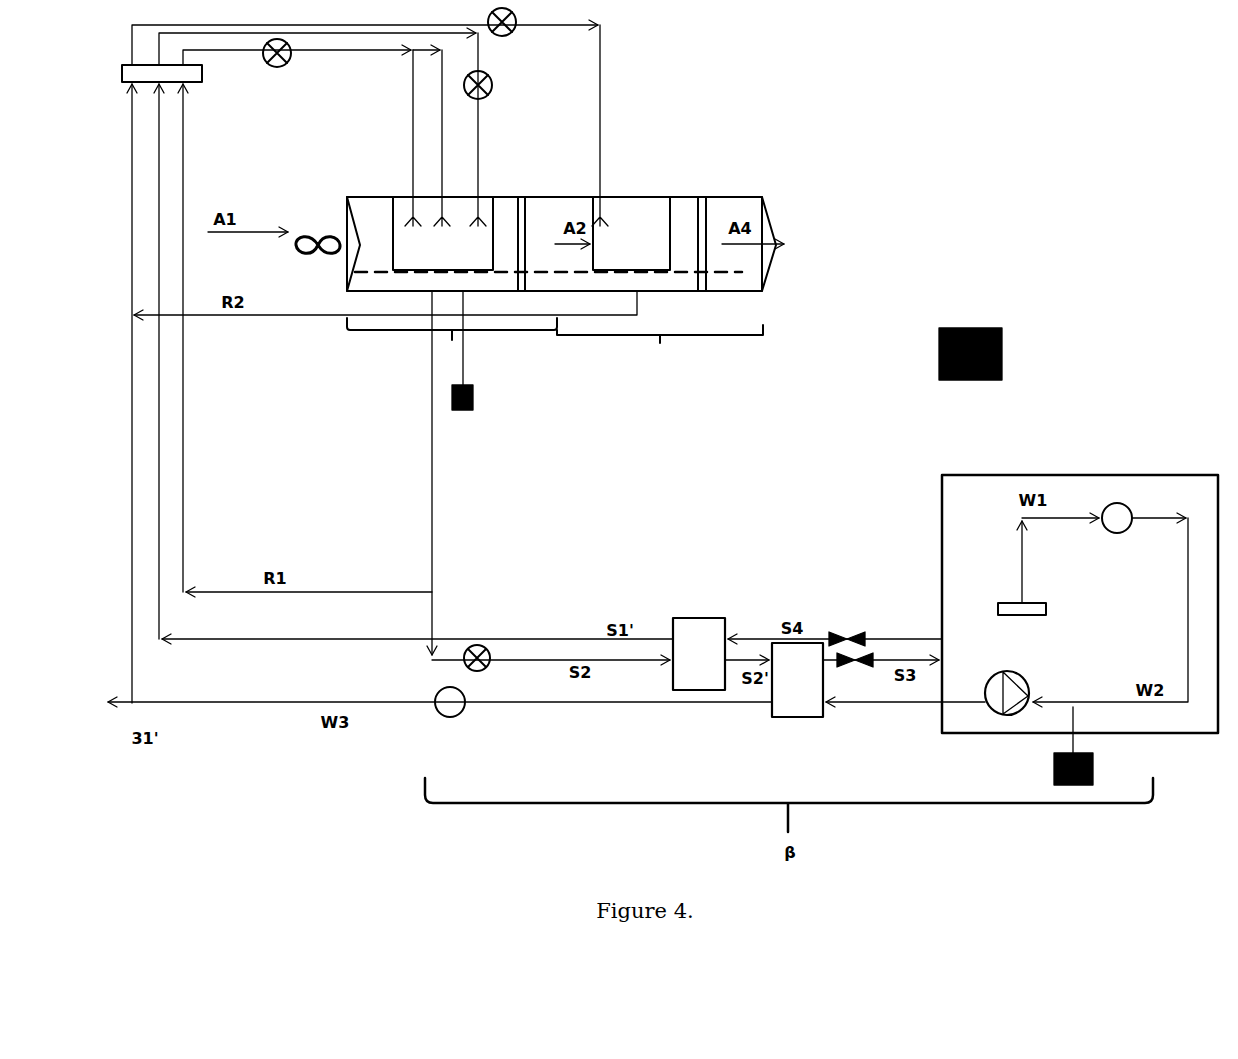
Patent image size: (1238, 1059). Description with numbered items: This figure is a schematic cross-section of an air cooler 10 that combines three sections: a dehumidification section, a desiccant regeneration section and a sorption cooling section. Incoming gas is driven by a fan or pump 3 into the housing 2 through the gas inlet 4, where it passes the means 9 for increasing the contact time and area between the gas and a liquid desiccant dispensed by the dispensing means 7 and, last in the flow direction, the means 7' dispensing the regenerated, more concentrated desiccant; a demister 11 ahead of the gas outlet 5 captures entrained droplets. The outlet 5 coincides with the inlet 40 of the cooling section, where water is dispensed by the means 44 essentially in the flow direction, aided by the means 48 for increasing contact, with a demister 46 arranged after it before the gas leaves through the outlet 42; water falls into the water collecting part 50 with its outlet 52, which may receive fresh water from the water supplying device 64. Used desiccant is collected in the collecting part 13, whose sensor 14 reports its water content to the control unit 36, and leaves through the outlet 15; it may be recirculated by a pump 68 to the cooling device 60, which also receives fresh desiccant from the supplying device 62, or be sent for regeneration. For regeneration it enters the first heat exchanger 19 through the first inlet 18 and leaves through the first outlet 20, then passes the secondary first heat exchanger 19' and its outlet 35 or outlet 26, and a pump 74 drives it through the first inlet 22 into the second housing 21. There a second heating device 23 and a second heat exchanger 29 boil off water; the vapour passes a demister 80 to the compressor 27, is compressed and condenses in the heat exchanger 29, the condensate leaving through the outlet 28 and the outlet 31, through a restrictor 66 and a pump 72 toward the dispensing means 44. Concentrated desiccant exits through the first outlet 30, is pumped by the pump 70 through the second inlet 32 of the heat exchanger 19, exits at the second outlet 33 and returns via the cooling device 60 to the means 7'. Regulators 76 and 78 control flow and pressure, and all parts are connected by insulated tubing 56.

The first housing 2 is at (518, 313).
The fan or pump 3 is at (318, 256).
The first gas inlet 4 is at (529, 276).
The first gas outlet 5 is at (554, 176).
The first inlet 40 is at (540, 230).
The means for dispensing a liquid desiccant 7 is at (406, 170).
The means for dispensing regenerated desiccant 7' is at (429, 154).
The means for increasing contact time and contact area 9 is at (380, 198).
The air cooler 10 is at (1035, 131).
The demister 11 is at (530, 278).
The liquid desiccant collecting part 13 is at (385, 286).
The sensor 14 is at (476, 353).
The outlet 15 is at (425, 300).
The first inlet 18 is at (664, 677).
The first heat exchanger 19 is at (701, 728).
The secondary first heat exchanger 19' is at (805, 748).
The first outlet 20 is at (729, 668).
The second housing 21 is at (974, 745).
The first inlet 22 is at (935, 669).
The second heating device 23 is at (1090, 746).
The first outlet of secondary heat exchanger 26 is at (828, 650).
The compressor 27 is at (1117, 507).
The outlet of second heat exchanger 28 is at (983, 712).
The second heat exchanger 29 is at (1040, 687).
The first outlet 30 is at (937, 624).
The outlet 31 is at (763, 712).
The second inlet 32 is at (736, 627).
The second outlet 33 is at (665, 626).
The outlet 35 is at (831, 713).
The control unit 36 is at (960, 341).
The first outlet 42 is at (772, 208).
The means for dispensing aqueous solution 44 is at (637, 196).
The demister 46 is at (710, 254).
The means for increasing contact time and contact area 48 is at (692, 196).
The water collecting part 50 is at (658, 294).
The outlet 52 is at (647, 299).
The tubing 56 is at (232, 497).
The cooling device 60 is at (144, 65).
The liquid desiccant supplying device 62 is at (973, 527).
The water supplying device 64 is at (130, 130).
The restrictor 66 is at (450, 717).
The pump 68 is at (277, 72).
The pump 70 is at (497, 85).
The pump 72 is at (510, 33).
The pump 74 is at (486, 670).
The regulator 76 is at (849, 626).
The regulator 78 is at (876, 646).
The demister 80 is at (1052, 599).